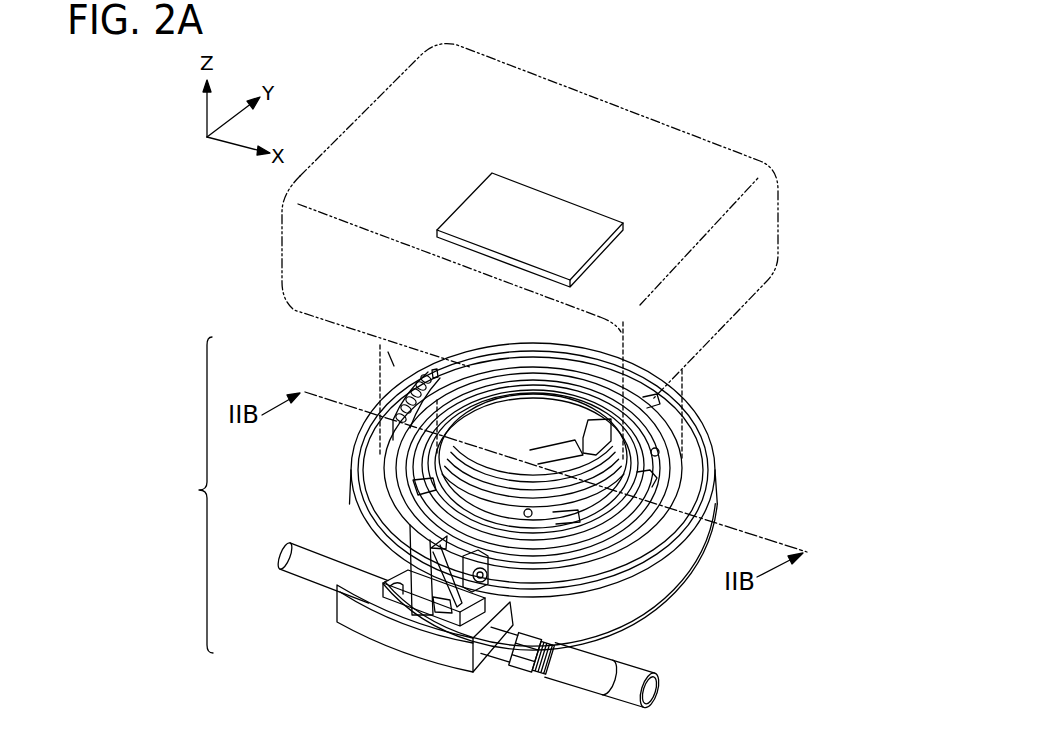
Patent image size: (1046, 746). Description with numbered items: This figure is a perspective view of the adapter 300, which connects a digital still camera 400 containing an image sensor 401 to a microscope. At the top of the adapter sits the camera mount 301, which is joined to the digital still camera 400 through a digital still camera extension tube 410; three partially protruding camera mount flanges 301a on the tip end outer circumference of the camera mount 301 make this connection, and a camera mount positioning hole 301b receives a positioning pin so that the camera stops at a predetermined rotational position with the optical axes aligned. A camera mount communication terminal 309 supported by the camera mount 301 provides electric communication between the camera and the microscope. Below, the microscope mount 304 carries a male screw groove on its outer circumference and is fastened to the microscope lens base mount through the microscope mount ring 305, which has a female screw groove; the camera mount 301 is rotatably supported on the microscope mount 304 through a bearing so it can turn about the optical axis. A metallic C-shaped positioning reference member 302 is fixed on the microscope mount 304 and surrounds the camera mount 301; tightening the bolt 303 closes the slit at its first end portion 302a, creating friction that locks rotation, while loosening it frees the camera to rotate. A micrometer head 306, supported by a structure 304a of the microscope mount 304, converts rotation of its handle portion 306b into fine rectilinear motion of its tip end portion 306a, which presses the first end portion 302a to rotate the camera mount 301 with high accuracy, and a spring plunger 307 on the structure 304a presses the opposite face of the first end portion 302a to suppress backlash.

The adapter 300 is at (187, 495).
The camera mount 301 is at (675, 462).
The camera mount flange 301a is at (512, 347).
The camera mount positioning hole 301b is at (661, 449).
The positioning reference member 302 is at (700, 481).
The first end portion 302a is at (412, 578).
The bolt 303 is at (452, 588).
The microscope mount 304 is at (710, 548).
The structure 304a is at (402, 615).
The microscope mount ring 305 is at (657, 607).
The micrometer head 306 is at (498, 660).
The tip end portion 306a is at (414, 588).
The handle portion 306b is at (666, 692).
The spring plunger 307 is at (323, 568).
The camera mount communication terminal 309 is at (396, 396).
The digital still camera 400 is at (675, 147).
The image sensor 401 is at (548, 192).
The digital still camera extension tube 410 is at (394, 364).